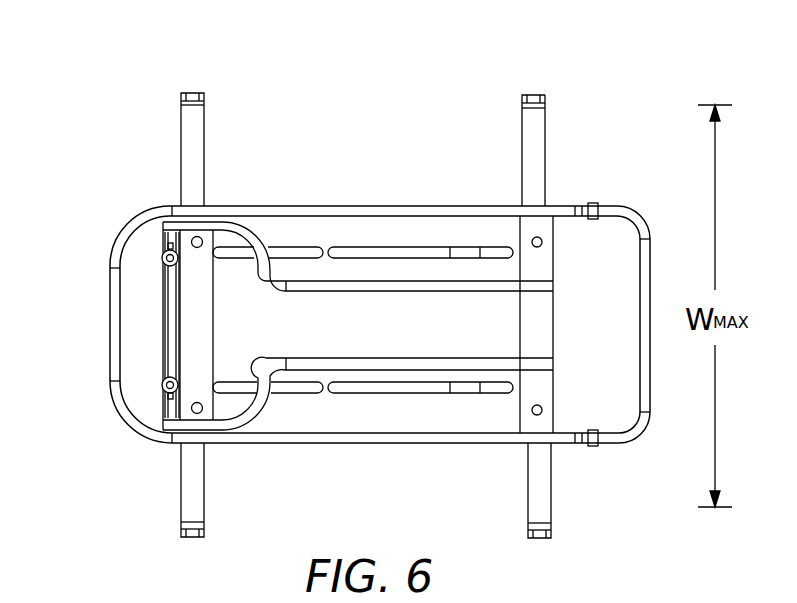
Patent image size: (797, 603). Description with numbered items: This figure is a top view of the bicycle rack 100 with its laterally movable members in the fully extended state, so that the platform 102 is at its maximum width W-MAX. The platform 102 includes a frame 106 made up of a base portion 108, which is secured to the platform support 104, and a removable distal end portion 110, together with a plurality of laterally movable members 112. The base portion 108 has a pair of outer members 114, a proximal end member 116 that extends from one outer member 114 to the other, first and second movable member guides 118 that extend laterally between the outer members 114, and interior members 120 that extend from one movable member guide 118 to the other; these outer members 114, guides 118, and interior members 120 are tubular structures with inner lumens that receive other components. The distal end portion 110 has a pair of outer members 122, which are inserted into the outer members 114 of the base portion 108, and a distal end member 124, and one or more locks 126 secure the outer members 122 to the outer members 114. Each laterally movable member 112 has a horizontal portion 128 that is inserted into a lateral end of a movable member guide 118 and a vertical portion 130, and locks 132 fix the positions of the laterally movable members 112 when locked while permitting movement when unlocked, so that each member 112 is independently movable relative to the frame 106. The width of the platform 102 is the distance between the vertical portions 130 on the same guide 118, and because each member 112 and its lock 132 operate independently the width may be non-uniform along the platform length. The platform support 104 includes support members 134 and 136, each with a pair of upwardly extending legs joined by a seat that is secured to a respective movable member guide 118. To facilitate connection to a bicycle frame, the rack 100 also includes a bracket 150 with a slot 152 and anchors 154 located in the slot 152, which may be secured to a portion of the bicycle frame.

The rack 100 is at (241, 42).
The platform 102 is at (106, 150).
The platform support 104 is at (398, 379).
The frame 106 is at (362, 170).
The base portion 108 is at (104, 335).
The distal end portion 110 is at (644, 210).
The laterally movable member 112 is at (519, 133).
The outer member 114 is at (234, 206).
The proximal end member 116 is at (126, 421).
The movable member guide 118 is at (553, 257).
The interior member 120 is at (316, 281).
The outer member 122 is at (616, 446).
The distal end member 124 is at (640, 336).
The lock 126 is at (592, 446).
The horizontal portion 128 is at (546, 148).
The vertical portion 130 is at (534, 95).
The lock 132 is at (532, 240).
The support member 134 is at (283, 394).
The support member 136 is at (497, 396).
The bracket 150 is at (165, 291).
The slot 152 is at (165, 273).
The anchor 154 is at (163, 250).